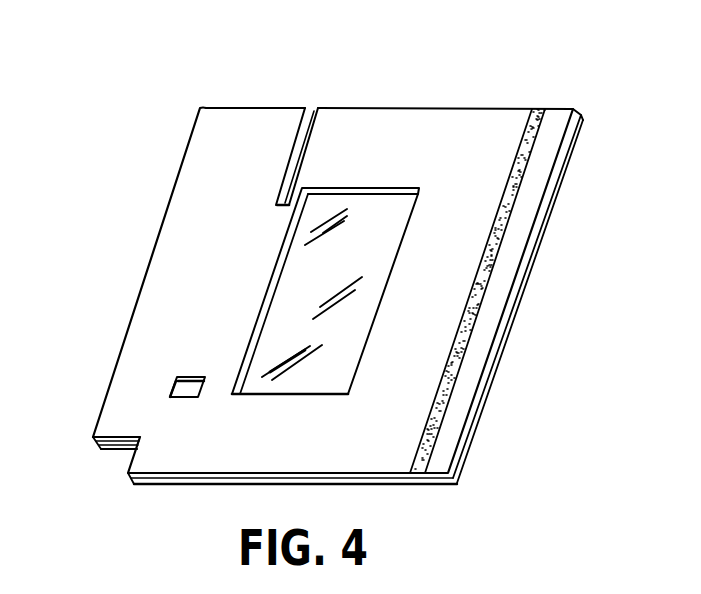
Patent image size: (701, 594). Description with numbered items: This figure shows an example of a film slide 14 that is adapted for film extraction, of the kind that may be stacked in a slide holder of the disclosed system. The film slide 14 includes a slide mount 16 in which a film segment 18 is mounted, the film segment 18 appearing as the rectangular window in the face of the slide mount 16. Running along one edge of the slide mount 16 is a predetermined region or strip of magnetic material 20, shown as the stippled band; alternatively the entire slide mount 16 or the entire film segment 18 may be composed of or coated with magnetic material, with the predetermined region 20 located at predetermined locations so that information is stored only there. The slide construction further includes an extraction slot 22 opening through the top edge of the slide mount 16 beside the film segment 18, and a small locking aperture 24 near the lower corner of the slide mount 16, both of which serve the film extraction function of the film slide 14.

The film slide 14 is at (127, 113).
The slide mount 16 is at (473, 366).
The film segment 18 is at (320, 380).
The strip of magnetic material 20 is at (518, 160).
The extraction slot 22 is at (316, 133).
The locking aperture 24 is at (172, 388).